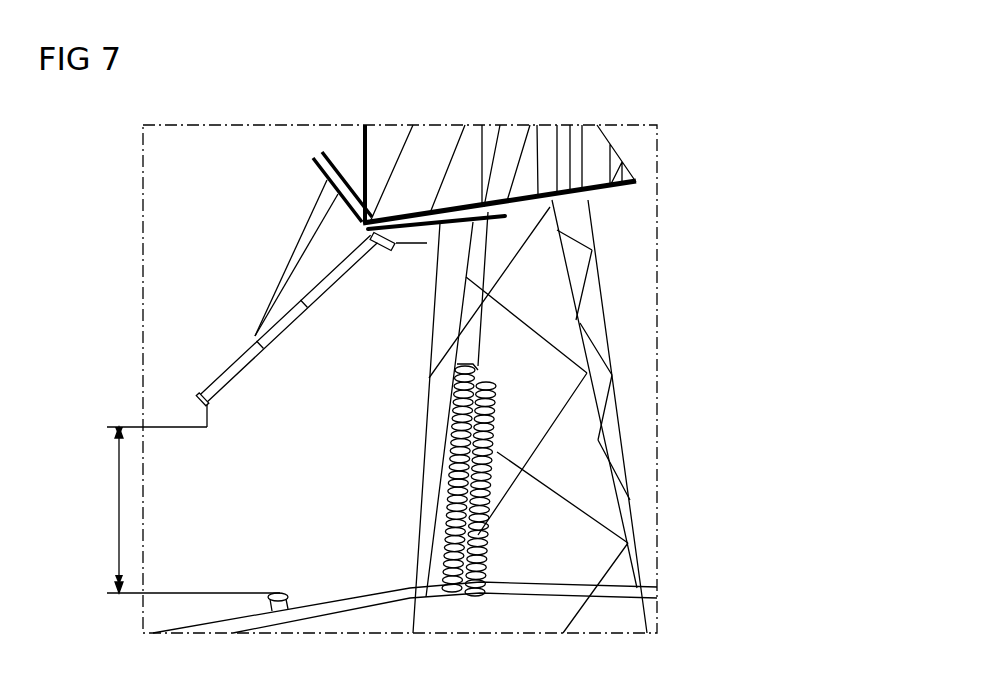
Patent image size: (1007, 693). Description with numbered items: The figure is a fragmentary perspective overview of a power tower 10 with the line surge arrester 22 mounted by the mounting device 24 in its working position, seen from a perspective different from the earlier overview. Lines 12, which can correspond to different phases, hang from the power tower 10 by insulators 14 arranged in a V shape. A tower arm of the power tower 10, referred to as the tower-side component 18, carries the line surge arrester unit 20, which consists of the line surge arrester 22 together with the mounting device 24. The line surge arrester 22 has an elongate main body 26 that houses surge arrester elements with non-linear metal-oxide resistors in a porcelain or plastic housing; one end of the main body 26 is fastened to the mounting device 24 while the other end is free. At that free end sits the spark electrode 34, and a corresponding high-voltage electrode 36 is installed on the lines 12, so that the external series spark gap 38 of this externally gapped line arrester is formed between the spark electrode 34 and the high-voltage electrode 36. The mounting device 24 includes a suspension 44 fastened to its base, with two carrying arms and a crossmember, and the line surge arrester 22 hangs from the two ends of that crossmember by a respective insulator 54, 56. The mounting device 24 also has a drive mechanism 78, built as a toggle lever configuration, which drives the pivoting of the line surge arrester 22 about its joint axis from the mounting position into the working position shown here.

The power tower 10 is at (632, 147).
The lines 12 is at (366, 612).
The insulators 14 is at (455, 500).
The tower-side component 18 is at (535, 130).
The line surge arrester unit 20 is at (379, 213).
The line surge arrester 22 is at (197, 371).
The mounting device 24 is at (361, 187).
The main body 26 is at (292, 339).
The spark electrode 34 is at (203, 425).
The high-voltage electrode 36 is at (278, 590).
The spark gap 38 is at (117, 512).
The suspension 44 is at (305, 162).
The insulator 54 is at (301, 239).
The insulator 56 is at (318, 197).
The drive mechanism 78 is at (386, 257).